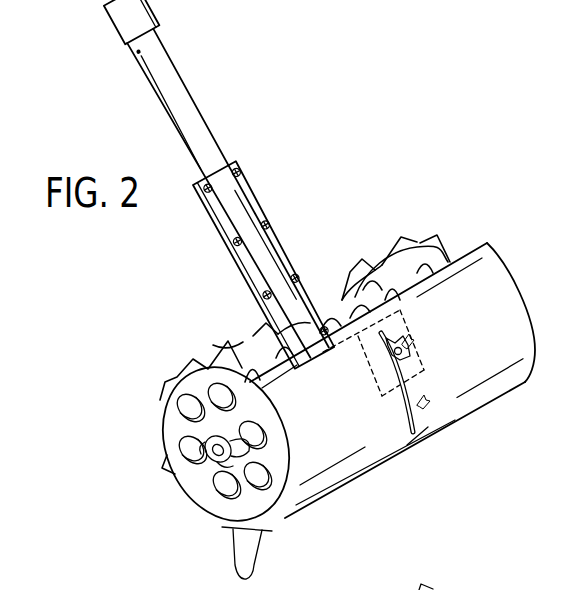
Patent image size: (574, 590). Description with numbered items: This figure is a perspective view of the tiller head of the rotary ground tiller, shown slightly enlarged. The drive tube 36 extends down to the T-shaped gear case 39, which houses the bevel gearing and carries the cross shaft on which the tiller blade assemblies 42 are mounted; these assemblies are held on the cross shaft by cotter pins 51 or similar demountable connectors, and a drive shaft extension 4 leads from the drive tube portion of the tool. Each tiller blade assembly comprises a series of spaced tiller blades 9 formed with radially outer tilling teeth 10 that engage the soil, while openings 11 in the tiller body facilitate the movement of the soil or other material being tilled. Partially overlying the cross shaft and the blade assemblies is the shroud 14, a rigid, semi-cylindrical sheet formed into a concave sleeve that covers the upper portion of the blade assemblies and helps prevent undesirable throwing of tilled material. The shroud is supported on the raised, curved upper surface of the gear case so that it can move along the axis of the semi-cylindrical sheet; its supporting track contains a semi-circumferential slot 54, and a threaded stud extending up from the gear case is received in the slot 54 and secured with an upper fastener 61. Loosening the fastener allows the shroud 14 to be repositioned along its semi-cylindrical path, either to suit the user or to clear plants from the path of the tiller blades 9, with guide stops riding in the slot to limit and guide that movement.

The drive shaft extension 4 is at (358, 288).
The tiller blades 9 is at (222, 350).
The tilling teeth 10 is at (249, 566).
The openings 11 is at (179, 412).
The shroud 14 is at (317, 460).
The drive tube 36 is at (195, 127).
The T-shaped gear case 39 is at (246, 216).
The tiller blade assemblies 42 is at (345, 221).
The cotter pins 51 is at (236, 468).
The semi-circumferential slot 54 is at (406, 414).
The upper fastener 61 is at (394, 360).